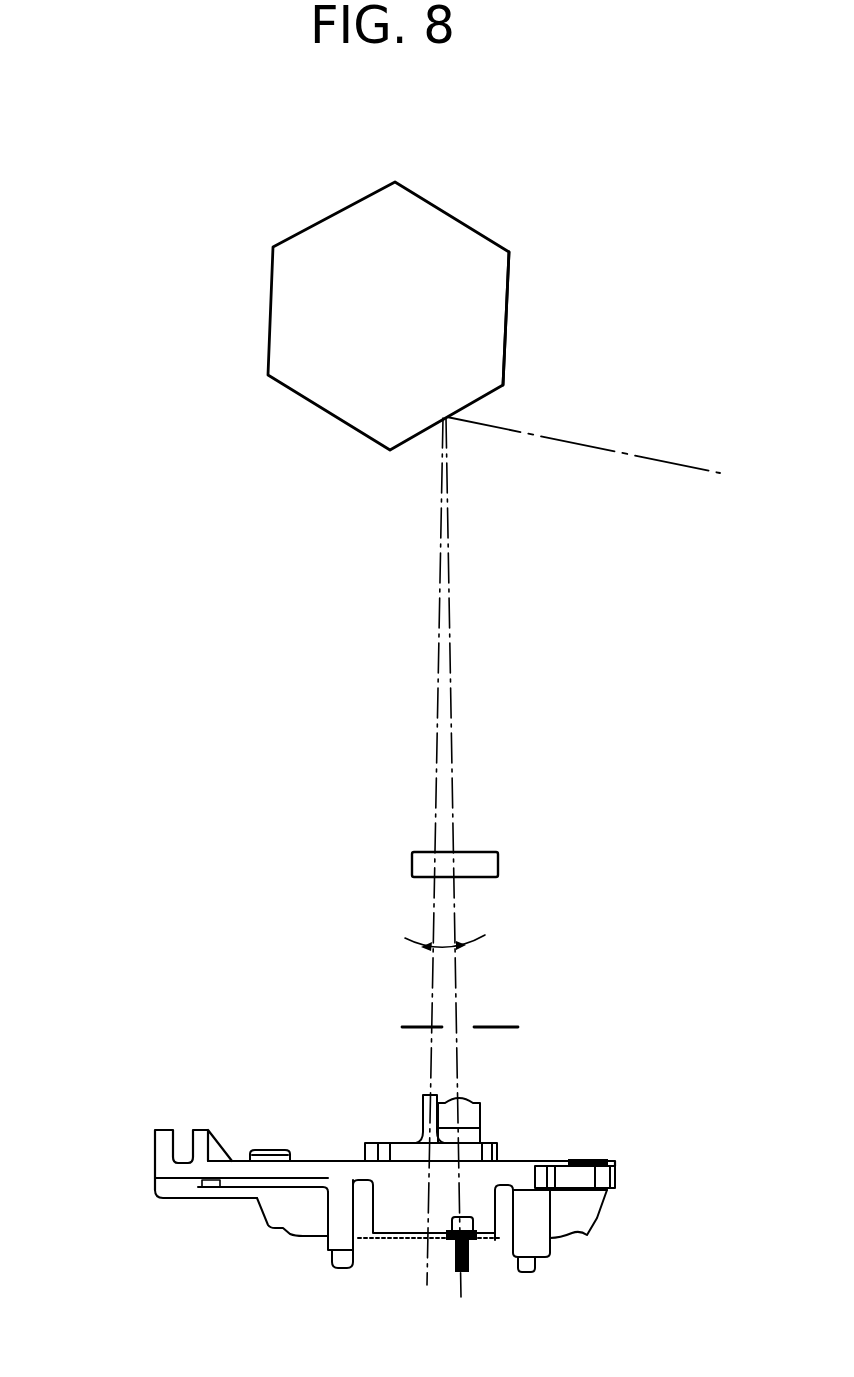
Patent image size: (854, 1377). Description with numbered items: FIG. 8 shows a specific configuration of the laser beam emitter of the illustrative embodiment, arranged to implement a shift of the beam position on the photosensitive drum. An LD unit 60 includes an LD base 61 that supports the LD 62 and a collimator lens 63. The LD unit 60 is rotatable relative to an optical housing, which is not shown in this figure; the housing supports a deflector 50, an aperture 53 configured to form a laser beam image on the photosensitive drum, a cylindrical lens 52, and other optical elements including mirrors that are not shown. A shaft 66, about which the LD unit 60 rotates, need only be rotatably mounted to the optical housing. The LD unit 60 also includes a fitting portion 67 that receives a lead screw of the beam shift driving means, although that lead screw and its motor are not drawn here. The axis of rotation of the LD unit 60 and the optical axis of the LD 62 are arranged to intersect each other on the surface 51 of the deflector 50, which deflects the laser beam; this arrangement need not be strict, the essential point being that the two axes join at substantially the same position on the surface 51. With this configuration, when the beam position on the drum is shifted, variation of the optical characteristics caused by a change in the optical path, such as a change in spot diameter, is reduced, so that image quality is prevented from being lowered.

The deflector 50 is at (462, 235).
The surface of the deflector 51 is at (508, 322).
The cylindrical lens 52 is at (498, 863).
The aperture 53 is at (495, 1025).
The LD unit 60 is at (645, 1155).
The LD base 61 is at (597, 1218).
The LD 62 is at (468, 1252).
The collimator lens 63 is at (480, 1118).
The shaft 66 is at (418, 1136).
The fitting portion 67 is at (155, 1143).